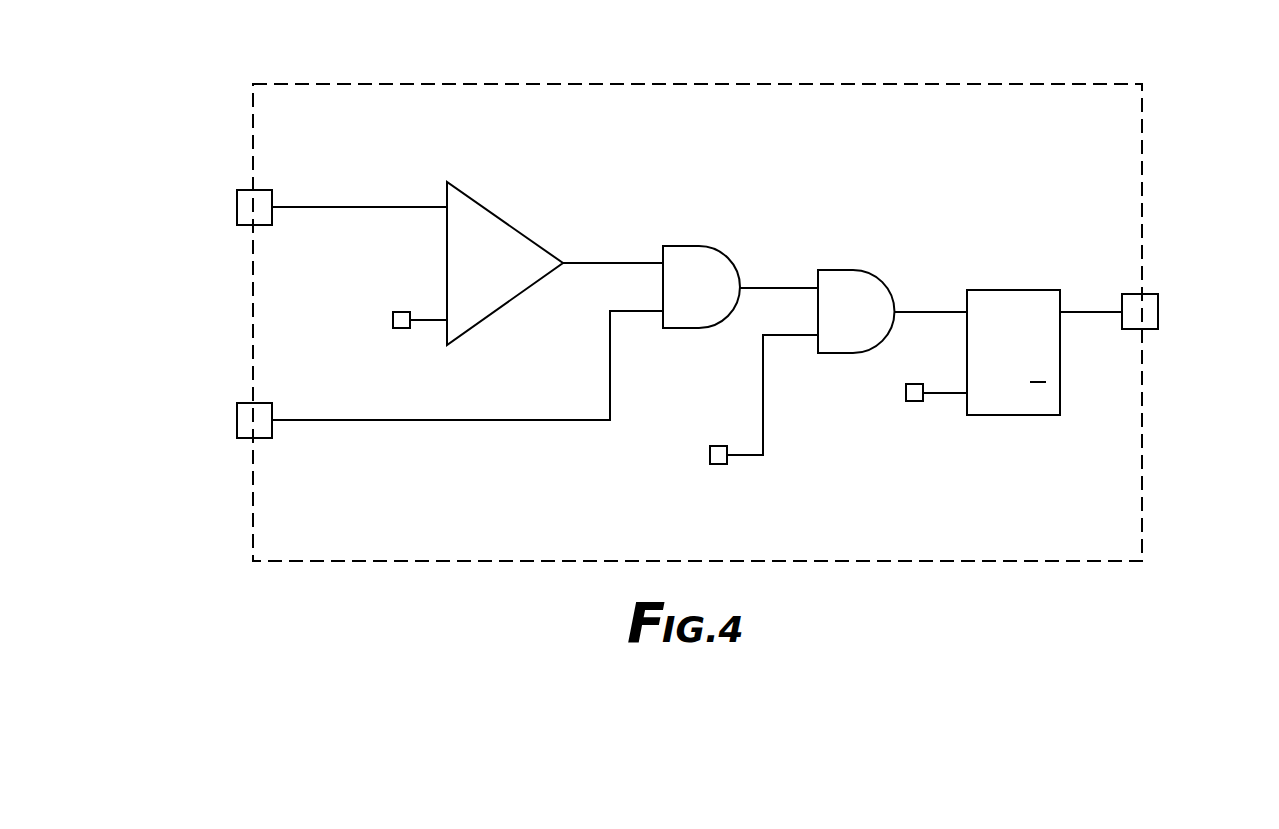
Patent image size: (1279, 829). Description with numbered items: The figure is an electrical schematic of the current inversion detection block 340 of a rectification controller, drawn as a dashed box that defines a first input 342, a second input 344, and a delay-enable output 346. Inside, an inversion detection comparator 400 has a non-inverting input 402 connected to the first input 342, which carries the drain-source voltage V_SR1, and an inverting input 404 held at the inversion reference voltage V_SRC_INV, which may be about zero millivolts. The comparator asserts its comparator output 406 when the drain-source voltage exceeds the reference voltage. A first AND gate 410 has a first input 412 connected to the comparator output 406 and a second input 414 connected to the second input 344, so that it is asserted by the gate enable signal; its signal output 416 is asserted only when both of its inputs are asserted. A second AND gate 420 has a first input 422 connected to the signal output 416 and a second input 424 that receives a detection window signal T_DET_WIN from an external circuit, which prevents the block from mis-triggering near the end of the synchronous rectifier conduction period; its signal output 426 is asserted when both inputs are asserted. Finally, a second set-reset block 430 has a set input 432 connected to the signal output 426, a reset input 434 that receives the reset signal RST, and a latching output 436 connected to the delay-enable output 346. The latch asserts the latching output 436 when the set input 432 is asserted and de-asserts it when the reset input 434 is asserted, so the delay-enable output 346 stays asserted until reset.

The current inversion detection block 340 is at (1068, 84).
The first input 342 is at (237, 206).
The second input 344 is at (237, 417).
The delay-enable output 346 is at (1160, 305).
The inversion detection comparator 400 is at (497, 215).
The non-inverting input 402 is at (447, 206).
The inverting input 404 is at (447, 318).
The comparator output 406 is at (563, 258).
The first AND gate 410 is at (686, 247).
The first input 412 is at (663, 262).
The second input 414 is at (663, 315).
The signal output 416 is at (742, 290).
The second AND gate 420 is at (840, 270).
The first input 422 is at (818, 292).
The second input 424 is at (818, 346).
The signal output 426 is at (895, 308).
The second set-reset block 430 is at (1010, 290).
The set input 432 is at (967, 302).
The reset input 434 is at (967, 396).
The latching output 436 is at (1062, 310).